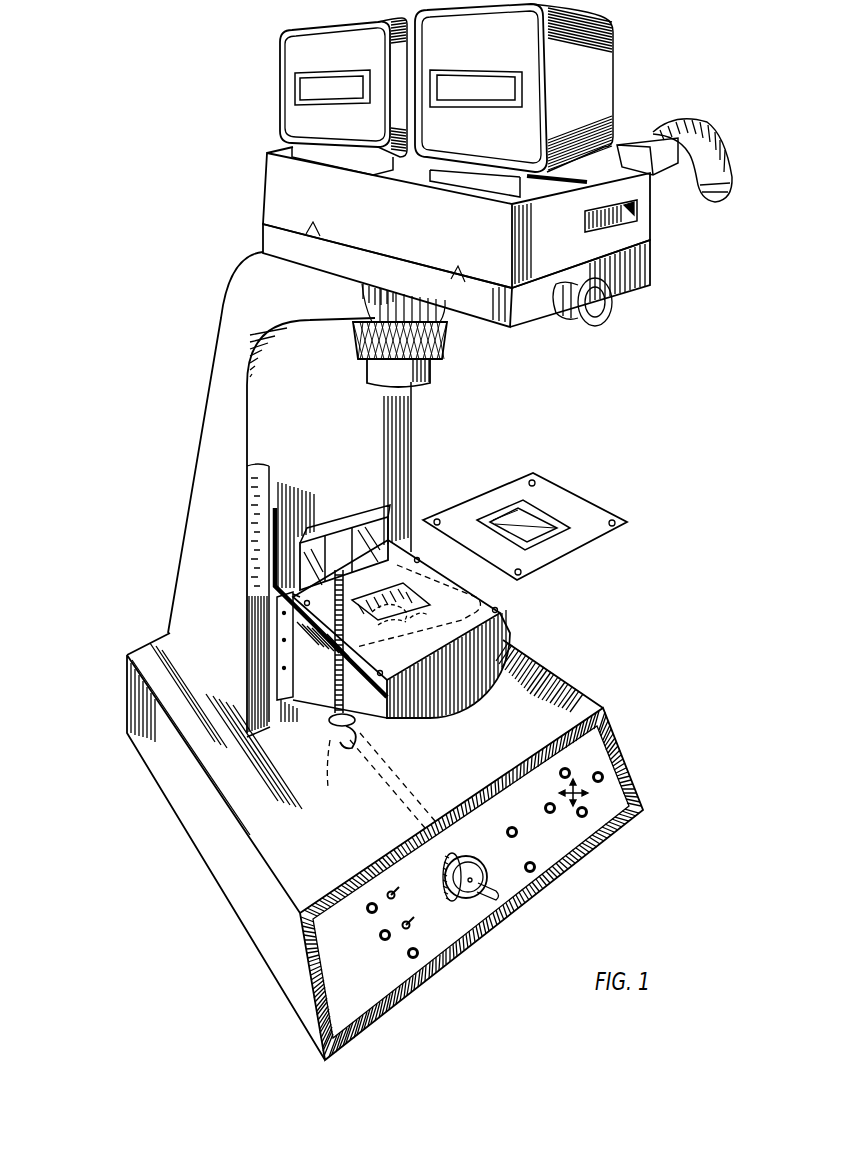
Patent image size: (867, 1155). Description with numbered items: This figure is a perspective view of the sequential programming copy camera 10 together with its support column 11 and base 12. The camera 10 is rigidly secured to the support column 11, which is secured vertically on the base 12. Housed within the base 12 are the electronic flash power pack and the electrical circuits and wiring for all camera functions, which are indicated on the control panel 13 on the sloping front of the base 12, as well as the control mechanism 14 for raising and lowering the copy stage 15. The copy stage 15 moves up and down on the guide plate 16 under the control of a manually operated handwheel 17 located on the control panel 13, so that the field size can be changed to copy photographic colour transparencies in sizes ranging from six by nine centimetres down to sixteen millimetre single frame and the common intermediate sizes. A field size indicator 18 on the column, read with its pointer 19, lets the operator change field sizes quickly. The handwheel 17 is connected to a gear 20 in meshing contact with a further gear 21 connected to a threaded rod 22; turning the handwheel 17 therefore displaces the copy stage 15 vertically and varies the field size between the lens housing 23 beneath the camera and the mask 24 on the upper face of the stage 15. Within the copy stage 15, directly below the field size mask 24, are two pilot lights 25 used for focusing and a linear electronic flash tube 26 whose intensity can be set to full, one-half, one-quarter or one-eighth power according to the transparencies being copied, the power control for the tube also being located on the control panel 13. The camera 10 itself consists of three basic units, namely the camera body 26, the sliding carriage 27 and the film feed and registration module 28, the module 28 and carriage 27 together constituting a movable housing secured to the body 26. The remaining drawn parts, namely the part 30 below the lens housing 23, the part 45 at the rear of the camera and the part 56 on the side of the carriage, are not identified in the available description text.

The sequential programming camera 10 is at (128, 386).
The support column 11 is at (397, 437).
The base 12 is at (200, 823).
The control panel 13 is at (338, 1050).
The control mechanism 14 is at (516, 933).
The copy stage 15 is at (446, 629).
The guide plate 16 is at (375, 527).
The handwheel 17 is at (483, 876).
The field size indicator 18 is at (257, 467).
The pointer 19 is at (268, 522).
The gear 20 is at (364, 736).
The further gear 21 is at (371, 781).
The threaded rod 22 is at (332, 718).
The lens housing 23 is at (447, 340).
The mask 24 is at (566, 498).
The pilot lights 25 is at (467, 597).
The camera body 26 is at (296, 247).
The sliding carriage 27 is at (453, 193).
The film feed and registration module 28 is at (296, 53).
The lens barrel 30 is at (426, 379).
The handle 45 is at (692, 128).
The slot 56 is at (628, 216).